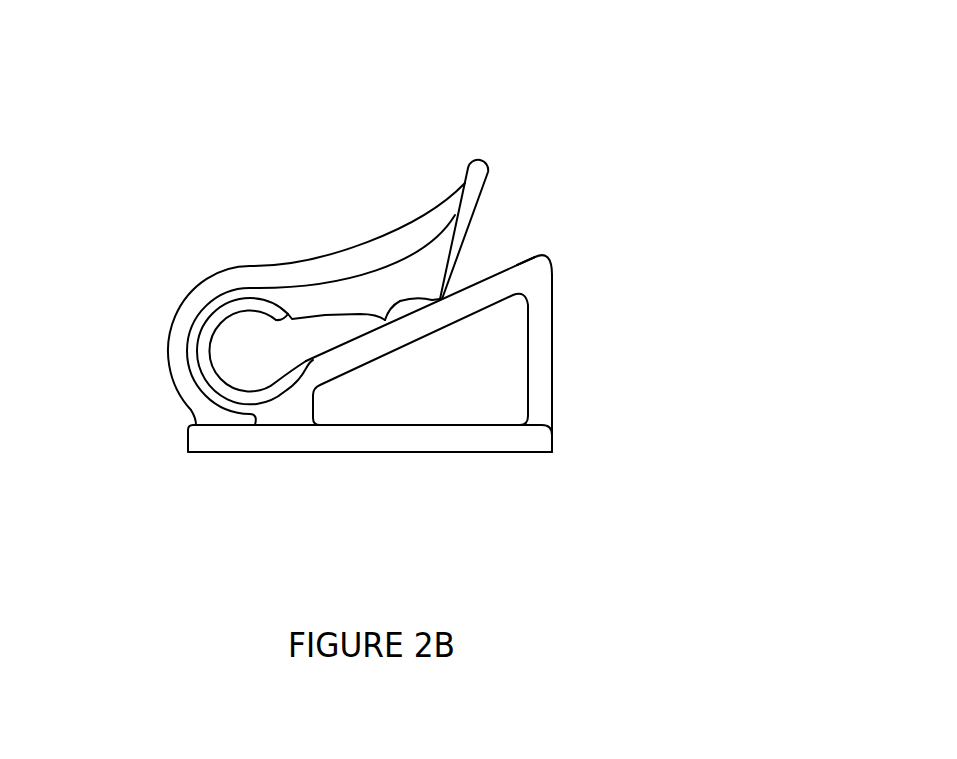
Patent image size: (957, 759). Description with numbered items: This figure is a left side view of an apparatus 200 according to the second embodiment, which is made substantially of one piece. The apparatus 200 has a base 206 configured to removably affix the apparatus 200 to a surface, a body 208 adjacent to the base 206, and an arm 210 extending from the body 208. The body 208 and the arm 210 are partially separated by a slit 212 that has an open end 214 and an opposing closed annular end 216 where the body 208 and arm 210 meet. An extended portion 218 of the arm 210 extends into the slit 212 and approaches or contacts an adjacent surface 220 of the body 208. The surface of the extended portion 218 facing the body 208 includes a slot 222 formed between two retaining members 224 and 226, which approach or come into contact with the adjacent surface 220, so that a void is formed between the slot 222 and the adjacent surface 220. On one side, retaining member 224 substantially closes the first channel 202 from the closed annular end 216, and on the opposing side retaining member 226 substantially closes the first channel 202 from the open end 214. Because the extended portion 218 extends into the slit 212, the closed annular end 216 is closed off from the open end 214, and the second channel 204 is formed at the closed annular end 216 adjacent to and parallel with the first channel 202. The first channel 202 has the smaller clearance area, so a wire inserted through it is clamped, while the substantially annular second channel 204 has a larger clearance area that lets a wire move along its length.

The apparatus 200 is at (405, 306).
The first channel 202 is at (410, 307).
The second channel 204 is at (248, 353).
The base 206 is at (283, 453).
The body 208 is at (552, 333).
The arm 210 is at (488, 165).
The slit 212 is at (303, 337).
The open end 214 is at (225, 357).
The closed annular end 216 is at (467, 273).
The extended portion 218 is at (482, 210).
The adjacent surface 220 is at (639, 250).
The slot 222 is at (408, 297).
The retaining member 224 is at (385, 320).
The retaining member 226 is at (440, 297).